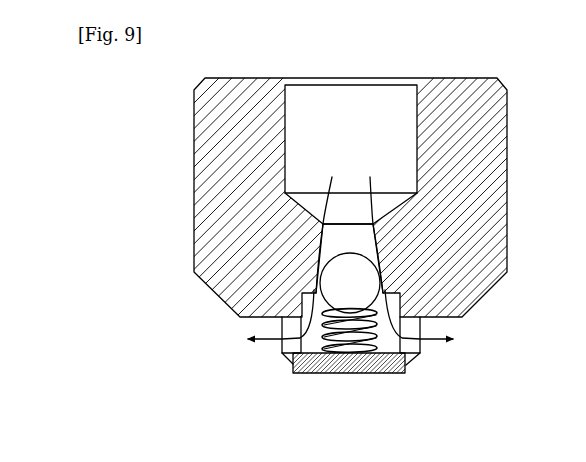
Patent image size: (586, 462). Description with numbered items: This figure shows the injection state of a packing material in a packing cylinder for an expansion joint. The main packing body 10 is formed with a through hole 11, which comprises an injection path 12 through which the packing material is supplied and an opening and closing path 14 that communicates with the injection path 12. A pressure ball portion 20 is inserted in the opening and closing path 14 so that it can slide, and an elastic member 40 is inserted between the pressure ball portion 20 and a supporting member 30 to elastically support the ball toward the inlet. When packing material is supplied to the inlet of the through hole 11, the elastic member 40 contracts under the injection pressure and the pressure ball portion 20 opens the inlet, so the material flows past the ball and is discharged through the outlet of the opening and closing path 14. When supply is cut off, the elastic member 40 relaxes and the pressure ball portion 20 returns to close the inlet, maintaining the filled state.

The main packing body 10 is at (190, 108).
The through hole 11 is at (254, 189).
The injection path 12 is at (295, 147).
The opening and closing path 14 is at (340, 241).
The pressure ball portion 20 is at (344, 284).
The supporting member 30 is at (381, 379).
The elastic member 40 is at (344, 342).